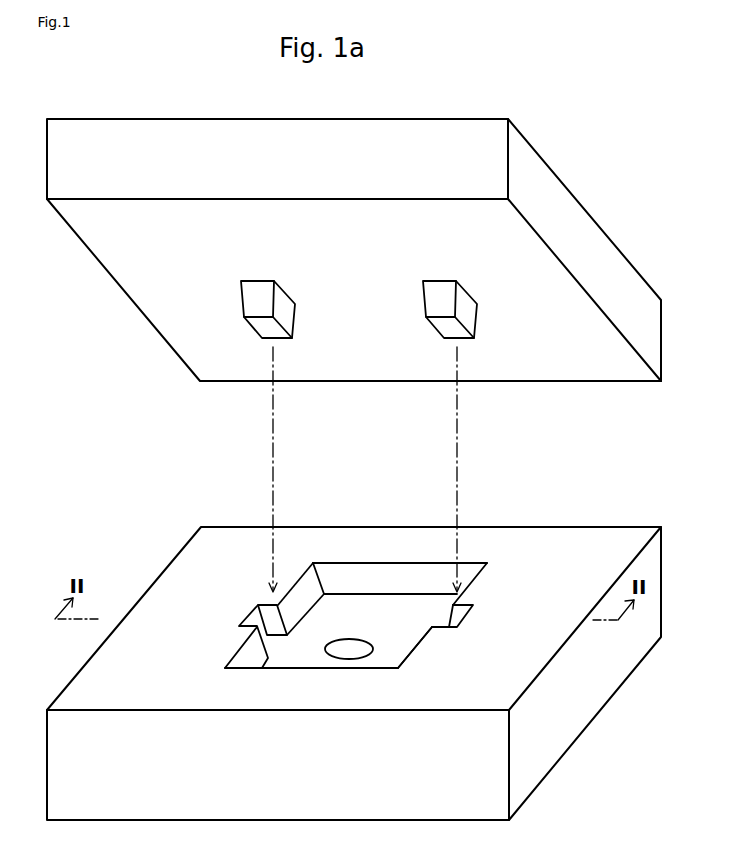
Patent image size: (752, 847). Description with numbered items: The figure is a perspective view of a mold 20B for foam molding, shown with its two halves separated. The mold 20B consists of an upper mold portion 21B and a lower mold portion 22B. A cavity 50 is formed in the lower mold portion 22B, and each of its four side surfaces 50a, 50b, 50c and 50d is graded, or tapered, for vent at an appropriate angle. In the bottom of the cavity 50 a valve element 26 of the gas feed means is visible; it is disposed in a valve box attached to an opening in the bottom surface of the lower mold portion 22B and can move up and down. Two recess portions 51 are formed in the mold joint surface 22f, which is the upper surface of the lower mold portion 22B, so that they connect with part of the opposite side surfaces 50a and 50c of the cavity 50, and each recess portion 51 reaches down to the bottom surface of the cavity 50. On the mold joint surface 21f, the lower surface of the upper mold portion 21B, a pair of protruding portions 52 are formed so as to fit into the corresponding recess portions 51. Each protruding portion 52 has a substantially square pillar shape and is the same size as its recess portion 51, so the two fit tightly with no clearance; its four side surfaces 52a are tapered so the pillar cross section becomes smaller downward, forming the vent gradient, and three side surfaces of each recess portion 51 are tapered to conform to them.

The mold 20B is at (604, 186).
The upper mold portion 21B is at (628, 255).
The mold joint surface (lower surface) 21f is at (220, 366).
The protruding portion 52 is at (280, 332).
The side surface of protruding portion 52a is at (284, 306).
The lower mold portion 22B is at (661, 526).
The mold joint surface (upper surface) 22f is at (193, 565).
The cavity 50 is at (330, 572).
The side surface of cavity 50a is at (242, 655).
The side surface of cavity 50b is at (382, 577).
The side surface of cavity 50c is at (412, 647).
The side surface of cavity 50d is at (318, 662).
The recess portion 51 is at (252, 617).
The valve element 26 is at (350, 645).